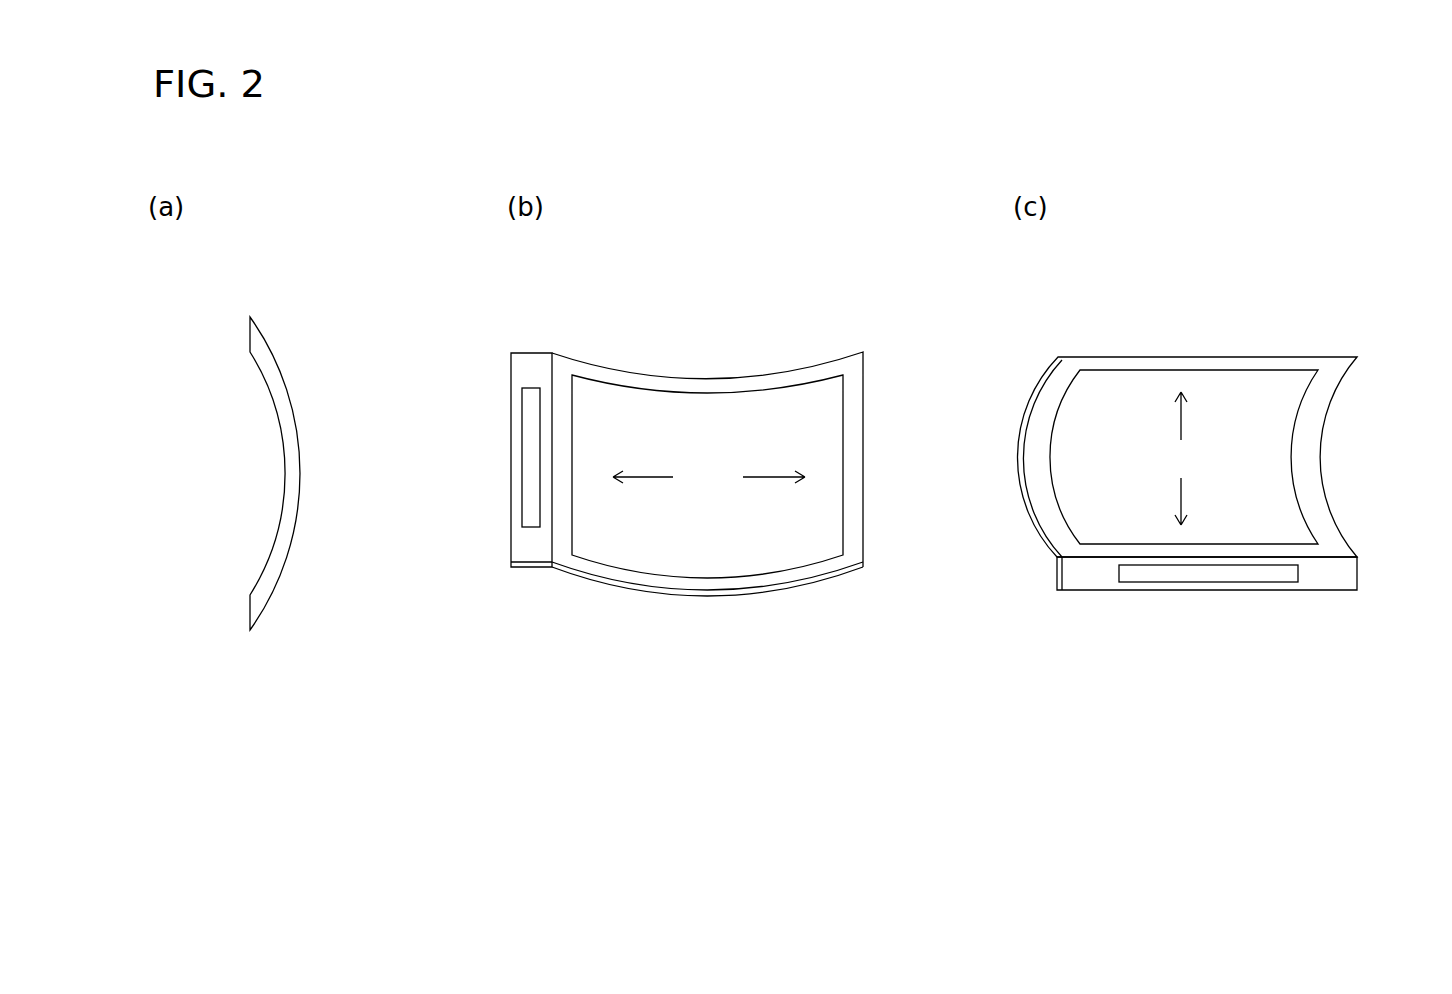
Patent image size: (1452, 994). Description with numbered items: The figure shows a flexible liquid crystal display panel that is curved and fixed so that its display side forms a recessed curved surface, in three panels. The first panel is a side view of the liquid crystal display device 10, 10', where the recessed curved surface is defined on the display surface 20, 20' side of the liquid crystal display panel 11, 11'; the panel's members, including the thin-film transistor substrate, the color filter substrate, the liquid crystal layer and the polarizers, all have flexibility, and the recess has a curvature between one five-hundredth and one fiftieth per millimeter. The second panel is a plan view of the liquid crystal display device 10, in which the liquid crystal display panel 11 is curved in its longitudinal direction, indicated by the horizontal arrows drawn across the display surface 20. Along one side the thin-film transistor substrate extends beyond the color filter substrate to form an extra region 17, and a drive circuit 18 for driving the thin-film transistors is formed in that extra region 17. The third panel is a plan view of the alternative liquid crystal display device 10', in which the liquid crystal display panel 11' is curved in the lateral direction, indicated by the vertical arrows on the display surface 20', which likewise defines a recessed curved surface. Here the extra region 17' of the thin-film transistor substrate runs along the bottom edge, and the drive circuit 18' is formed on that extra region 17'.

The liquid crystal display device 10 is at (546, 467).
The liquid crystal display device 10' is at (1225, 451).
The liquid crystal display panel 11 is at (584, 520).
The liquid crystal display panel 11' is at (1225, 482).
The extra region 17 is at (537, 431).
The extra region 17' is at (1245, 569).
The drive circuit 18 is at (530, 504).
The drive circuit 18' is at (1208, 605).
The display surface 20 is at (546, 476).
The display surface 20' is at (1225, 457).